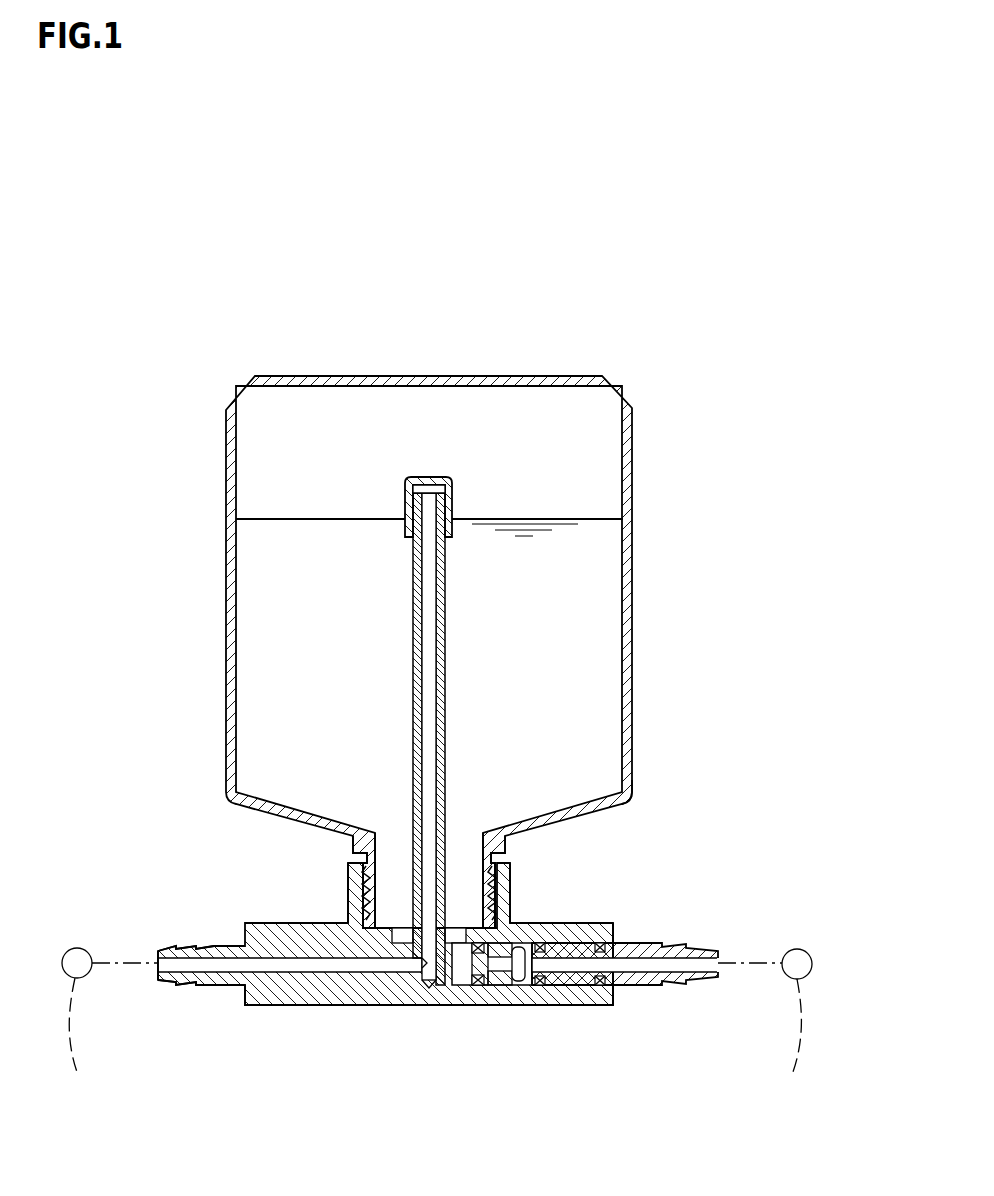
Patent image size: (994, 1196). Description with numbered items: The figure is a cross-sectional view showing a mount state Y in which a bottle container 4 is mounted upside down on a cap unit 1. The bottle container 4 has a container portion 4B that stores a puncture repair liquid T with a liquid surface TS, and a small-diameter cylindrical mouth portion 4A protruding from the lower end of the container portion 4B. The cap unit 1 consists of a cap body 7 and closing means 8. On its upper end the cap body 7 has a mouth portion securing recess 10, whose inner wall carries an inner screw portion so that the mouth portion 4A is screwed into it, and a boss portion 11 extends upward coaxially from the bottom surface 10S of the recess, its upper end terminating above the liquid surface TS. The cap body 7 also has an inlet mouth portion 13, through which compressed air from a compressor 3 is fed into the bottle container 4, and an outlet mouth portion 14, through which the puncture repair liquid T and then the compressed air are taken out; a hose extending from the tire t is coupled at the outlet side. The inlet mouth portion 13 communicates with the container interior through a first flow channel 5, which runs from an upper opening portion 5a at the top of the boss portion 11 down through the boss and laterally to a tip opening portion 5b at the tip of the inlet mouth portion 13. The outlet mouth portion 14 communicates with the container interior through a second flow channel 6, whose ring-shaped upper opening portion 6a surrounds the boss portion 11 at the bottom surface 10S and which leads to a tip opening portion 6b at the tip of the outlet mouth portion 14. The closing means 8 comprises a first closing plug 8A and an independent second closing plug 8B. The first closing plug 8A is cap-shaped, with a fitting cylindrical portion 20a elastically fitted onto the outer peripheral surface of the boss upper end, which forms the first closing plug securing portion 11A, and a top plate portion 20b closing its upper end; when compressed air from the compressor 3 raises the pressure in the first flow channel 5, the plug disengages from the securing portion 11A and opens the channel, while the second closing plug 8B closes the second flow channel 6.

The cap unit 1 is at (748, 857).
The compressor 3 is at (110, 1024).
The bottle container 4 is at (509, 652).
The mouth portion 4A is at (482, 852).
The container portion 4B is at (632, 647).
The first flow channel 5 is at (396, 691).
The upper opening portion 5a is at (431, 492).
The tip opening portion 5b is at (158, 968).
The second flow channel 6 is at (462, 960).
The upper opening portion 6a is at (453, 937).
The tip opening portion 6b is at (622, 933).
The cap body 7 is at (577, 995).
The closing means 8 is at (381, 391).
The first closing plug 8A is at (381, 391).
The second closing plug 8B is at (522, 985).
The mouth portion securing recess 10 is at (292, 880).
The bottom surface 10S is at (359, 893).
The boss portion 11 is at (345, 651).
The first closing plug securing portion 11A is at (447, 507).
The inlet mouth portion 13 is at (157, 942).
The outlet mouth portion 14 is at (622, 1015).
The fitting cylindrical portion 20a is at (403, 506).
The top plate portion 20b is at (420, 476).
The puncture repair liquid T is at (580, 588).
The liquid surface TS is at (582, 520).
The mount state Y is at (647, 852).
The tire t is at (765, 1024).